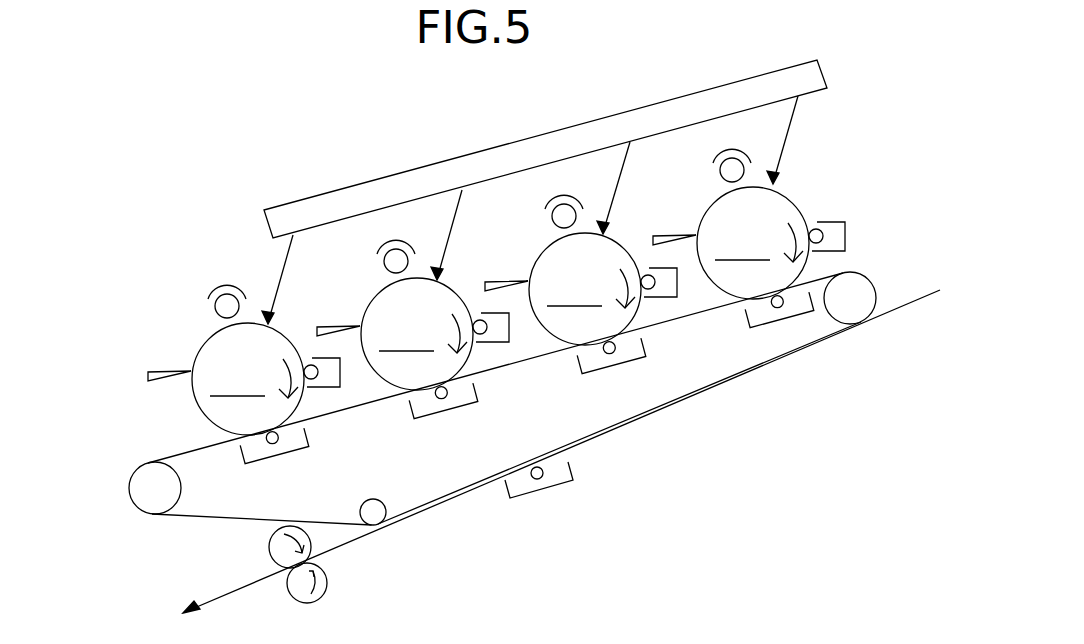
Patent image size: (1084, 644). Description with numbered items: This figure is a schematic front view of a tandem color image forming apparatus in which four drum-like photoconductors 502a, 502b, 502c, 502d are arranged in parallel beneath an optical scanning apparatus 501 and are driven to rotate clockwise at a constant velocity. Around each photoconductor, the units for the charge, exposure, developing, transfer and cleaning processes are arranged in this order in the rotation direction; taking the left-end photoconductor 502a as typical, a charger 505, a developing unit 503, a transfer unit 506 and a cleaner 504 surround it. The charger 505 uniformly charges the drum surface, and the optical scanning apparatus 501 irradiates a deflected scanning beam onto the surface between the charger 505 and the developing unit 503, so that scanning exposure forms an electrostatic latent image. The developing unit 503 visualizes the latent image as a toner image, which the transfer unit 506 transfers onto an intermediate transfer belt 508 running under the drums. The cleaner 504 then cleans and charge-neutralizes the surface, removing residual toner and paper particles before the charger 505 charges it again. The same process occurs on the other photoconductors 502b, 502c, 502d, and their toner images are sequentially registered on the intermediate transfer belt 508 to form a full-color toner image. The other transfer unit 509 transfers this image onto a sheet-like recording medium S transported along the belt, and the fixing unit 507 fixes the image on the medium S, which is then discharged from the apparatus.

The optical scanning apparatus 501 is at (545, 149).
The photoconductor 502a is at (248, 379).
The photoconductor 502b is at (417, 334).
The photoconductor 502c is at (585, 289).
The photoconductor 502d is at (753, 243).
The developing unit 503 is at (340, 388).
The cleaner 504 is at (137, 379).
The charger 505 is at (207, 313).
The transfer unit 506 is at (263, 467).
The fixing unit 507 is at (290, 592).
The intermediate transfer belt 508 is at (187, 457).
The other transfer unit 509 is at (569, 482).
The sheet-like recording medium S is at (926, 294).